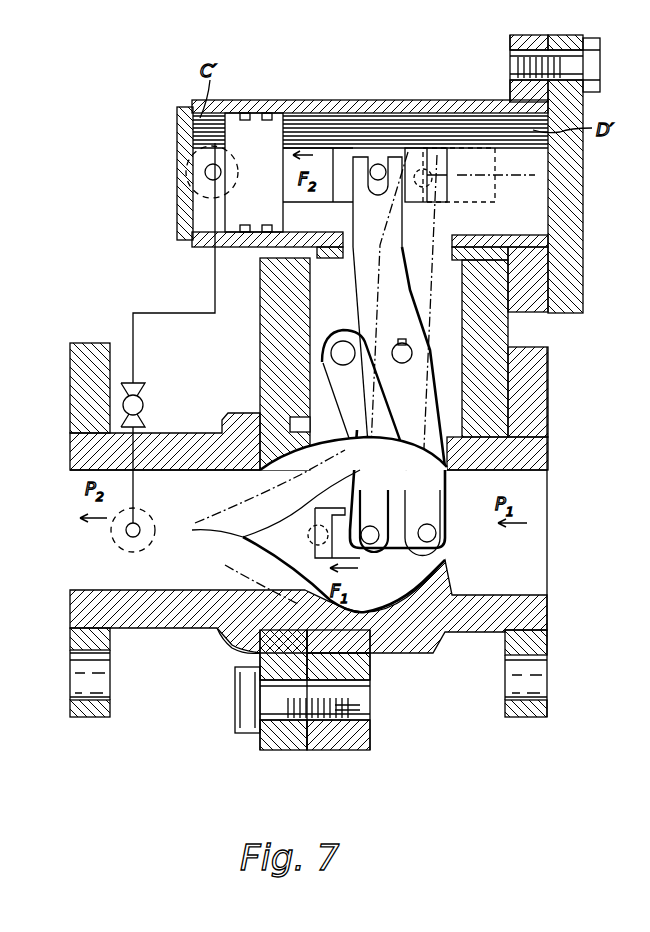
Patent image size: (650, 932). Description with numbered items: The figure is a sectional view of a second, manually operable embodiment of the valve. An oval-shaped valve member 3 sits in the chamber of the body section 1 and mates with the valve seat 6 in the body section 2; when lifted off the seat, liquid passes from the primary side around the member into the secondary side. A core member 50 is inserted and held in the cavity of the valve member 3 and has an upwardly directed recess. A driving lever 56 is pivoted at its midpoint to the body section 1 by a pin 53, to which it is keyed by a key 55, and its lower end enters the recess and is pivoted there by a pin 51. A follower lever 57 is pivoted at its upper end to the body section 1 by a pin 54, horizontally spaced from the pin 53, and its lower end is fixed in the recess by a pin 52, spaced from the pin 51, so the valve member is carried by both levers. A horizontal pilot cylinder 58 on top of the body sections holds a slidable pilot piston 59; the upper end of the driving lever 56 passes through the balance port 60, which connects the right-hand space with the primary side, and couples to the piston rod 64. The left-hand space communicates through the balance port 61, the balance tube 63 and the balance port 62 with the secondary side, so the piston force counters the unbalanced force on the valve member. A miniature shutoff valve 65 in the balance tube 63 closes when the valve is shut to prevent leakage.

The body section 1 is at (533, 619).
The body section 2 is at (80, 606).
The valve member 3 is at (368, 647).
The valve seat 6 is at (235, 643).
The core member 50 is at (457, 508).
The pin 51 is at (447, 552).
The pin 52 is at (378, 545).
The pin 53 is at (412, 357).
The pin 54 is at (333, 350).
The key 55 is at (412, 343).
The driving lever 56 is at (420, 426).
The follower lever 57 is at (343, 380).
The pilot cylinder 58 is at (432, 100).
The pilot piston 59 is at (275, 117).
The balance port 60 is at (438, 248).
The balance port 61 is at (198, 173).
The balance port 62 is at (137, 537).
The balance tube 63 is at (215, 272).
The piston rod 64 is at (342, 150).
The miniature shutoff valve 65 is at (143, 407).